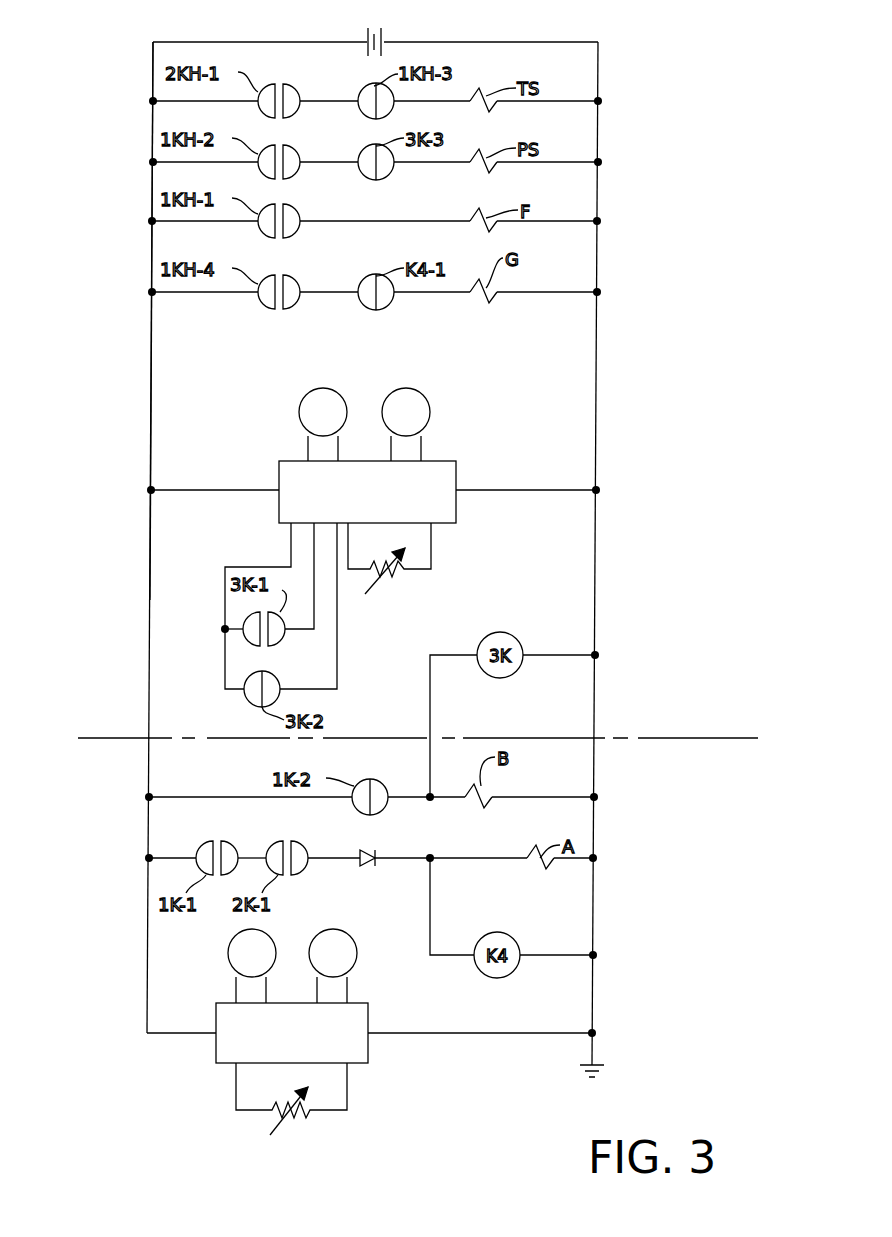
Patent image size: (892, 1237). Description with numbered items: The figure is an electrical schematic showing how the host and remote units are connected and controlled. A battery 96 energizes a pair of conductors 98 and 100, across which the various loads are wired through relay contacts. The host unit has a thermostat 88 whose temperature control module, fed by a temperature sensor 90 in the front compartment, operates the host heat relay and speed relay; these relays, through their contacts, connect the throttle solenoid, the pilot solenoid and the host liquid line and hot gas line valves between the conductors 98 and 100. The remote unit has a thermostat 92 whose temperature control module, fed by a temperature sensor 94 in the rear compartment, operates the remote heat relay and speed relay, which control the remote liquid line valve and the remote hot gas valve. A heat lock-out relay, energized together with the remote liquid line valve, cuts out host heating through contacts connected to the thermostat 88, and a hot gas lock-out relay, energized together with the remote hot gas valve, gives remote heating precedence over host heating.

The thermostat 88 is at (279, 482).
The temperature sensor 90 is at (385, 580).
The thermostat 92 is at (216, 1013).
The temperature sensor 94 is at (292, 1118).
The battery 96 is at (385, 40).
The conductor 98 is at (153, 70).
The conductor 100 is at (599, 80).